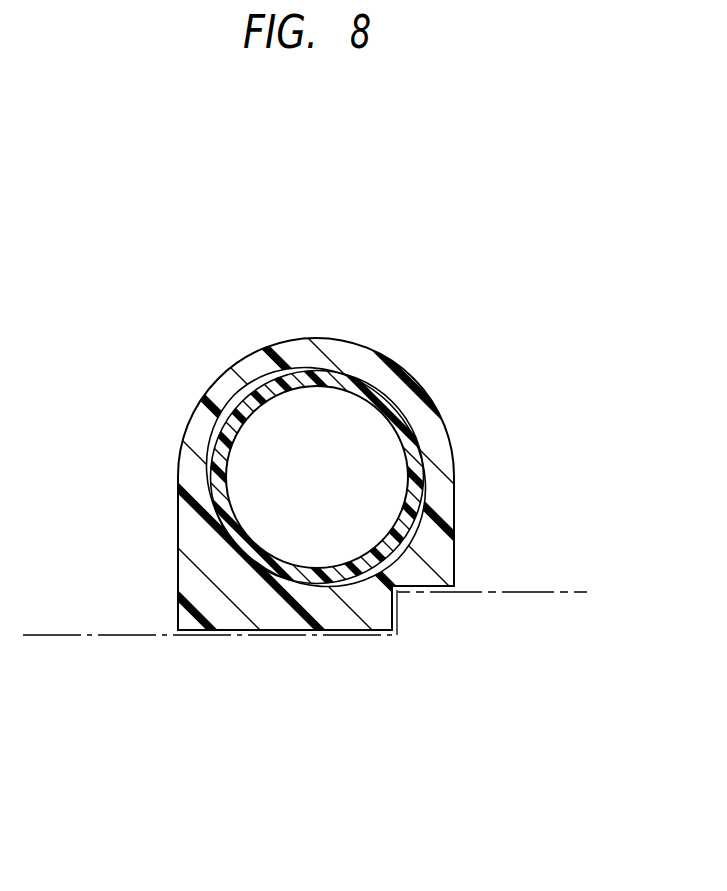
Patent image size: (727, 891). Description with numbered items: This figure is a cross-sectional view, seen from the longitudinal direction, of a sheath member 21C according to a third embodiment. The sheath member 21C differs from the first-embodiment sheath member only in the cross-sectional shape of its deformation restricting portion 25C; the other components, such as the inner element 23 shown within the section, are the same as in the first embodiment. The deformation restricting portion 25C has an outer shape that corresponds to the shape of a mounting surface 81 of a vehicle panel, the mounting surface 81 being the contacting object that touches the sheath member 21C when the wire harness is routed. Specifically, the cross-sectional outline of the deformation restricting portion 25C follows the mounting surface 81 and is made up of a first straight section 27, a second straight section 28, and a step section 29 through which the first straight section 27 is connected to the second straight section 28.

The sheath member 21C is at (331, 262).
The deformation restricting portion 25C is at (377, 351).
The tube (tube portion 23b) 23 is at (405, 442).
The first straight section 27 is at (281, 631).
The second straight section 28 is at (433, 587).
The step section 29 is at (398, 616).
The mounting surface 81 is at (535, 590).